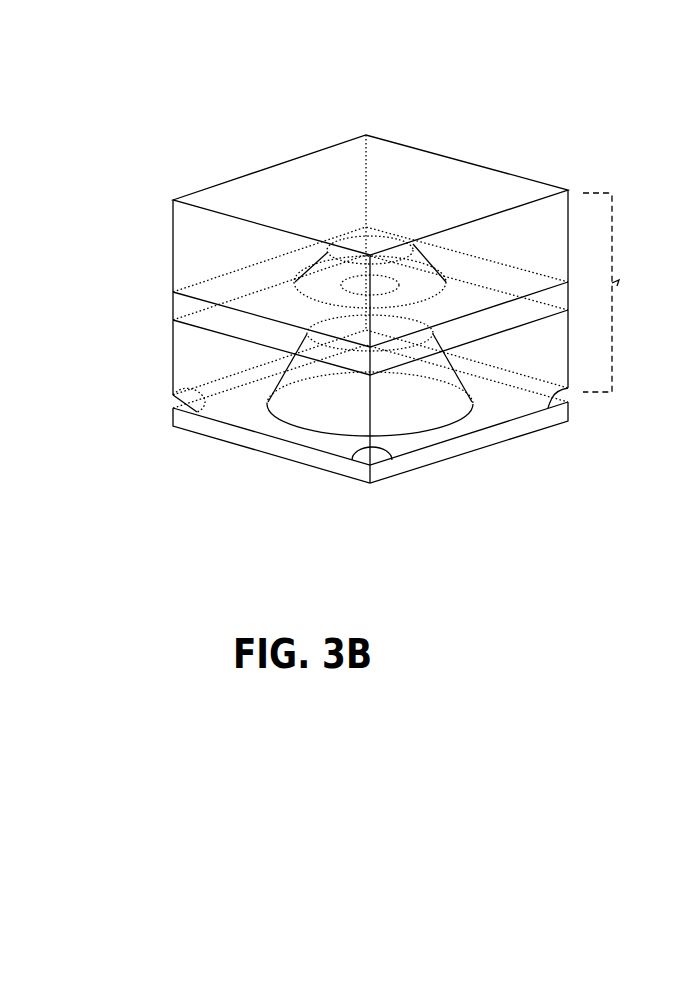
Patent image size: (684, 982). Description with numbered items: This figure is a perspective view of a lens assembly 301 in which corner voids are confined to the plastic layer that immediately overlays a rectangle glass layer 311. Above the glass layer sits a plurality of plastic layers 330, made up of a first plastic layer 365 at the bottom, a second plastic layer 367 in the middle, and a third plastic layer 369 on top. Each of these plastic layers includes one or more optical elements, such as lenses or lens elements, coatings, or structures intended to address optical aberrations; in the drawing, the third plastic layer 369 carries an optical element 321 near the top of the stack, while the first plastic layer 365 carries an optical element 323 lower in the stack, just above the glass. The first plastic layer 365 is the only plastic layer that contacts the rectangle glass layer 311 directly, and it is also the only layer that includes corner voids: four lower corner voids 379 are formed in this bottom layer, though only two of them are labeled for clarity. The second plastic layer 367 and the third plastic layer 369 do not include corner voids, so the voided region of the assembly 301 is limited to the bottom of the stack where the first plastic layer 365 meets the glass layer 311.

The lens assembly 301 is at (135, 50).
The rectangle glass layer 311 is at (430, 471).
The optical element 321 is at (393, 247).
The optical element 323 is at (300, 427).
The plurality of plastic layers 330 is at (623, 292).
The first plastic layer 365 is at (172, 347).
The second plastic layer 367 is at (171, 302).
The third plastic layer 369 is at (171, 228).
The lower corner voids 379 is at (173, 408).